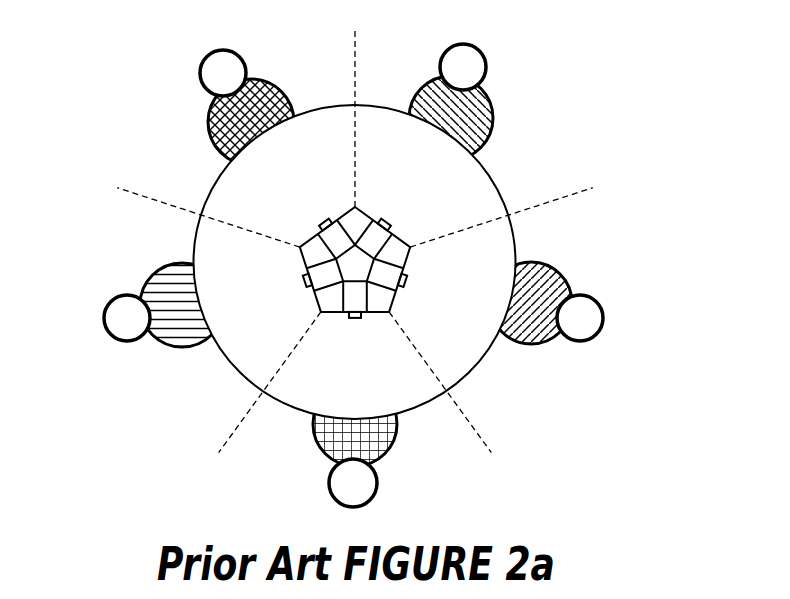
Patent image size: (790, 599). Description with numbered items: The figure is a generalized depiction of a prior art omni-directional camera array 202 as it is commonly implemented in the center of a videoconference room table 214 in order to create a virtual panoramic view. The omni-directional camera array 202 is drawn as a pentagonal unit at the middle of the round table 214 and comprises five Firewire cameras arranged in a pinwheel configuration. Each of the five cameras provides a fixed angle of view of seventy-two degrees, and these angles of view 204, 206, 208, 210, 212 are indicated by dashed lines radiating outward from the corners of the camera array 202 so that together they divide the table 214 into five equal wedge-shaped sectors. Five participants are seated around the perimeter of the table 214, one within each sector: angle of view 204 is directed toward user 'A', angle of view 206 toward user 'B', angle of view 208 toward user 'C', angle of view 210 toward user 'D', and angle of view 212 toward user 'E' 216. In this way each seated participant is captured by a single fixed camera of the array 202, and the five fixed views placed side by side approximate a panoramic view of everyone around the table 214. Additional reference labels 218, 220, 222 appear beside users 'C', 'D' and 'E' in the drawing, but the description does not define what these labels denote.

The omni-directional camera array 202 is at (302, 238).
The angle of view 204 is at (308, 172).
The angle of view 206 is at (434, 172).
The angle of view 208 is at (489, 302).
The angle of view 210 is at (372, 394).
The angle of view 212 is at (256, 302).
The videoconference room table 214 is at (500, 398).
The user 'E' 216 is at (497, 123).
The user C 218 is at (555, 268).
The user D 220 is at (397, 432).
The user E 222 is at (147, 282).